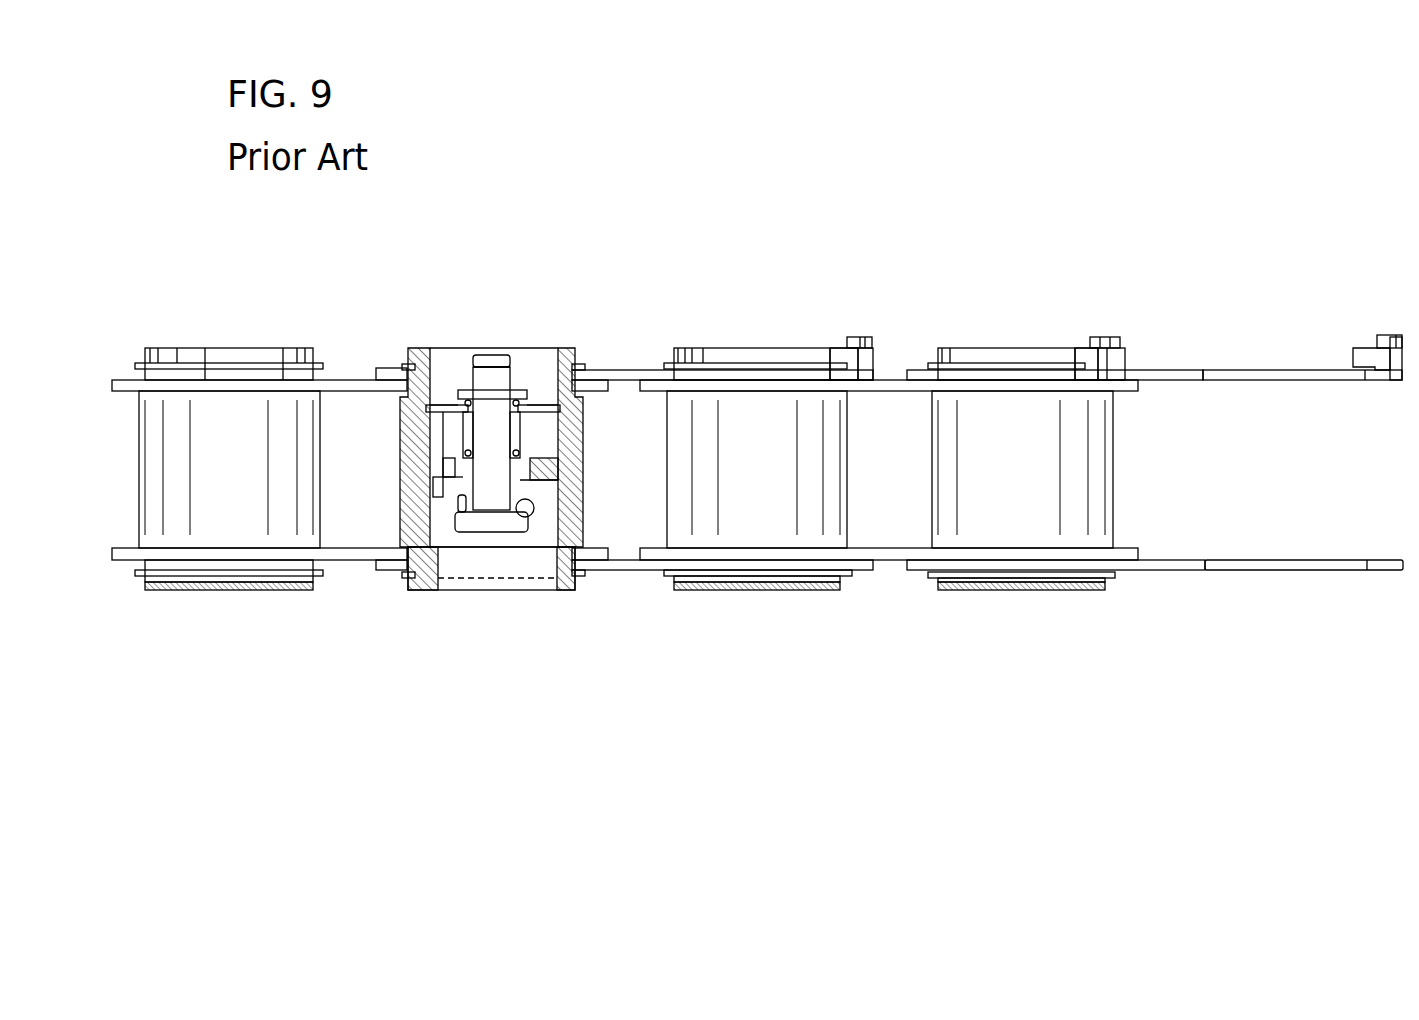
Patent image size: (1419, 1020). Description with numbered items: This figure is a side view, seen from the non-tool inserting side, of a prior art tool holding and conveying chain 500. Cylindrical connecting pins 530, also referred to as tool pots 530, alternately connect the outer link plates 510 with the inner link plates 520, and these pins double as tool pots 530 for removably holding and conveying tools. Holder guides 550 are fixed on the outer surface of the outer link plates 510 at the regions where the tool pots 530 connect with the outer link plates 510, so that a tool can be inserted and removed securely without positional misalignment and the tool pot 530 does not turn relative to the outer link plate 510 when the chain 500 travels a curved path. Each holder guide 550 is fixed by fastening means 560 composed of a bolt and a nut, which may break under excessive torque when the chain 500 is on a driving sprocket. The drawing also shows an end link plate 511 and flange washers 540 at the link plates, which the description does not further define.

The tool holding and conveying chain 500 is at (1162, 192).
The outer link plate 510 is at (612, 374).
The end link plate 511 is at (1366, 376).
The inner link plate 520 is at (352, 384).
The cylindrical connecting pin 530 is at (190, 348).
The flange washer 540 is at (140, 362).
The holder guide 550 is at (836, 355).
The fastening means 560 is at (852, 337).